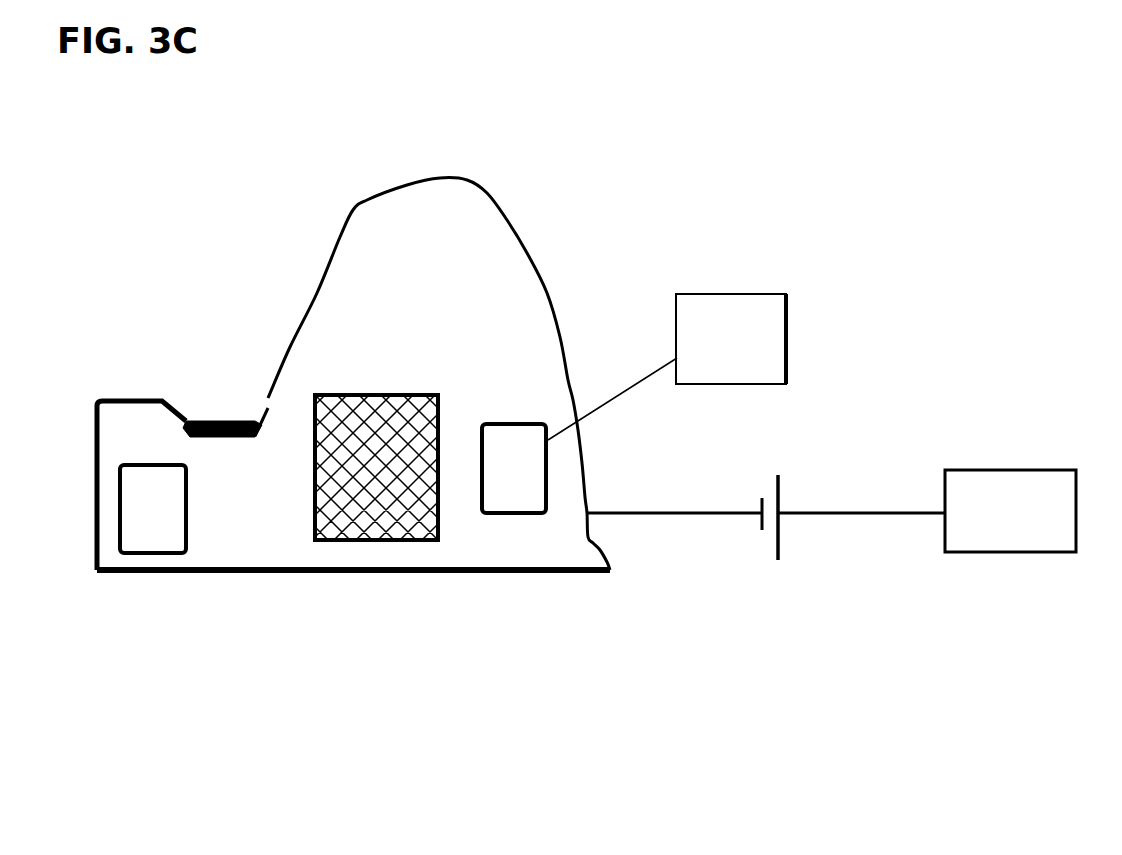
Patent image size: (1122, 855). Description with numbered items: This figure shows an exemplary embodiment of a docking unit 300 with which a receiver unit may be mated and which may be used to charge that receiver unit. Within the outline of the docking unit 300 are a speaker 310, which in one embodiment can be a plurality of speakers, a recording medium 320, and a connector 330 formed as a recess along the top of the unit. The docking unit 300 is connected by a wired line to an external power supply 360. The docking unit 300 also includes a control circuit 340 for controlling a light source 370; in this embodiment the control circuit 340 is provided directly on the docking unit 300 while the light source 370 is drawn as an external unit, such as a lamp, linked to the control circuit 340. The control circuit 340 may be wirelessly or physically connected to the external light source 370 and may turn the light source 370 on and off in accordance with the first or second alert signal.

The docking unit 300 is at (502, 257).
The speaker 310 is at (370, 518).
The recording medium 320 is at (143, 530).
The connector 330 is at (237, 418).
The control circuit 340 is at (503, 488).
The power supply 360 is at (995, 530).
The light source 370 is at (735, 308).